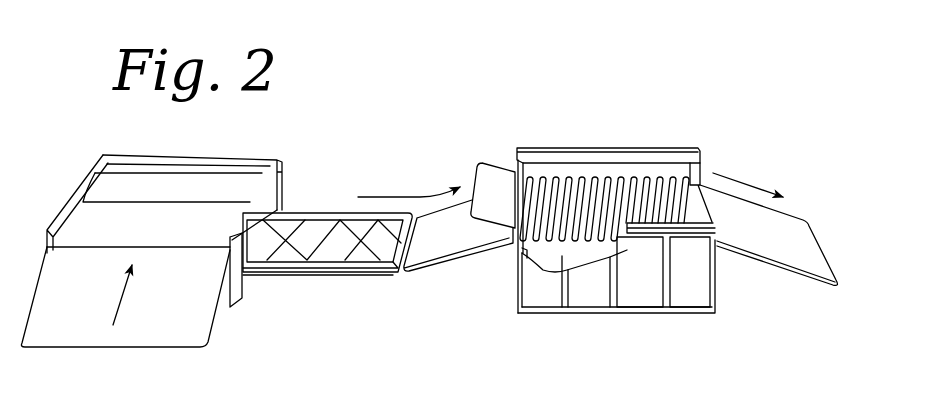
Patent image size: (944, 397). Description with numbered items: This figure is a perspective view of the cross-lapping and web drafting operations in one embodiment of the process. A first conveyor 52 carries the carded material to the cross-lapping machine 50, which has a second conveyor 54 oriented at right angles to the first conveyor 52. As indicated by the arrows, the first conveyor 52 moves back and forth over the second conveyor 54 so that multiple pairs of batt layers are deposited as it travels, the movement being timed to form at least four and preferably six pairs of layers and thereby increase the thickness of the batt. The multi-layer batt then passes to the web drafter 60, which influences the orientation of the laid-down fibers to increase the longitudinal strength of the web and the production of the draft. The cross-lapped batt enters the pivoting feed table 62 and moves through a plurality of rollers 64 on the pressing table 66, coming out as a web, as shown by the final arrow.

The cross-lapping machine 50 is at (367, 268).
The first conveyor 52 is at (192, 318).
The second conveyor 54 is at (327, 228).
The web drafter 60 is at (632, 320).
The pivoting feed table 62 is at (458, 240).
The rollers 64 is at (570, 180).
The pressing table 66 is at (673, 172).